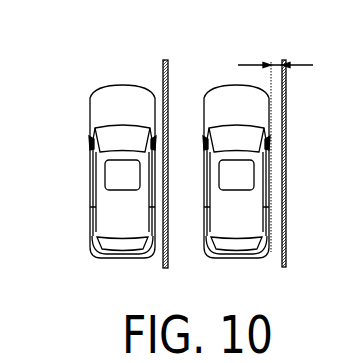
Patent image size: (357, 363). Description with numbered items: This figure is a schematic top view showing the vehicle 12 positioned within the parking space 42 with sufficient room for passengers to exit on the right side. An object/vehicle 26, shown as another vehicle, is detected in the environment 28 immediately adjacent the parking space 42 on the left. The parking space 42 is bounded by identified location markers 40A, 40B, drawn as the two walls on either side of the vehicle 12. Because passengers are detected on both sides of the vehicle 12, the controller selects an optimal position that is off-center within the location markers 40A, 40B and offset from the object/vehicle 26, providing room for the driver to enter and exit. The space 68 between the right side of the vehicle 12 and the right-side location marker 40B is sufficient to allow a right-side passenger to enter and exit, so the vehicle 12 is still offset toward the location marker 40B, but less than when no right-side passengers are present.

The vehicle 12 is at (250, 226).
The object/vehicle 26 is at (104, 88).
The environment 28 is at (137, 291).
The location marker 40A is at (163, 77).
The location marker 40B is at (282, 262).
The parking space 42 is at (204, 67).
The space 68 is at (291, 152).